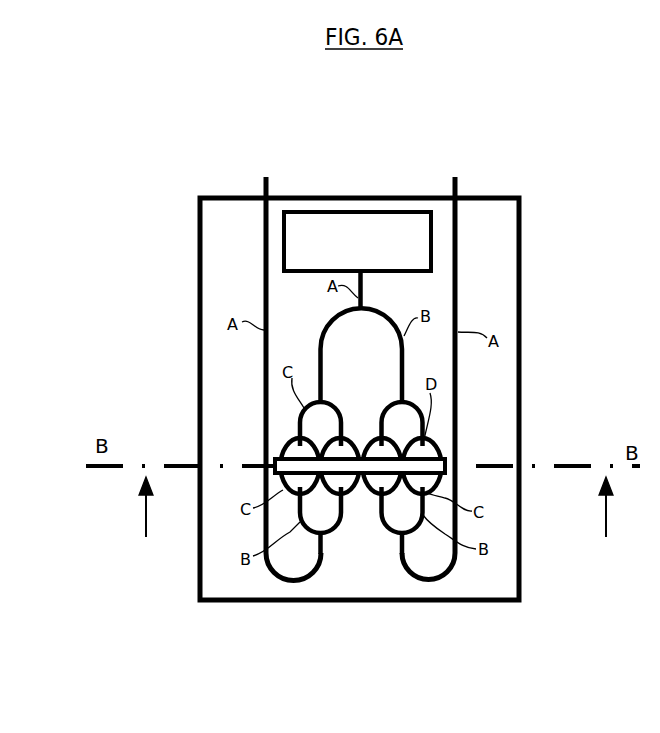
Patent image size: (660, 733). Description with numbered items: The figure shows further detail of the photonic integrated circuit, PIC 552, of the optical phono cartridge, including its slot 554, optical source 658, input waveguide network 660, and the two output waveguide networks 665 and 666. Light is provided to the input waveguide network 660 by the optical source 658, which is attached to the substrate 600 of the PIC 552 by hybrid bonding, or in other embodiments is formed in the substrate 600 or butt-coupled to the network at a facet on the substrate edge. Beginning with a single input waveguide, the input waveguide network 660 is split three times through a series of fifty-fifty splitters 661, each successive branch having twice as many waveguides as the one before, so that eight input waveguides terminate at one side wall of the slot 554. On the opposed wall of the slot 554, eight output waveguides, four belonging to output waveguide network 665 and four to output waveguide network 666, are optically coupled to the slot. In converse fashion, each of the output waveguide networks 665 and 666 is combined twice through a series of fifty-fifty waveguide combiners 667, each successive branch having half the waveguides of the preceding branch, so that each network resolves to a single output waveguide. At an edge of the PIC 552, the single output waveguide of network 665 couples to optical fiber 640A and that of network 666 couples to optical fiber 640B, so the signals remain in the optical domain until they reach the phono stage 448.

The PIC 552 is at (200, 405).
The slot 554 is at (445, 464).
The substrate 600 is at (315, 314).
The optical fiber 640A is at (465, 192).
The optical fiber 640B is at (262, 196).
The phono stage 448 is at (442, 185).
The optical source 658 is at (372, 265).
The input waveguide network 660 is at (398, 310).
The 50:50 splitters 661 is at (396, 400).
The output waveguide network 665 is at (470, 569).
The output waveguide network 666 is at (333, 567).
The 50:50 waveguide combiners 667 is at (323, 534).